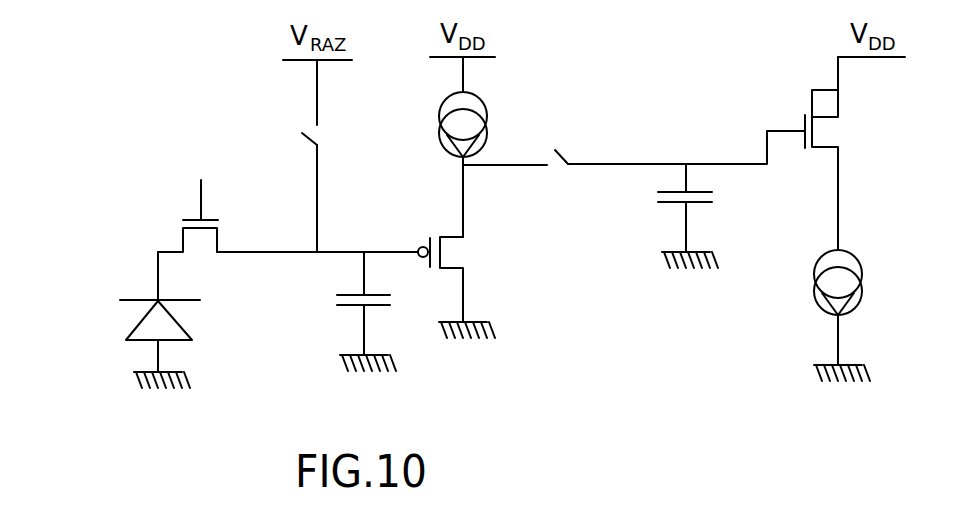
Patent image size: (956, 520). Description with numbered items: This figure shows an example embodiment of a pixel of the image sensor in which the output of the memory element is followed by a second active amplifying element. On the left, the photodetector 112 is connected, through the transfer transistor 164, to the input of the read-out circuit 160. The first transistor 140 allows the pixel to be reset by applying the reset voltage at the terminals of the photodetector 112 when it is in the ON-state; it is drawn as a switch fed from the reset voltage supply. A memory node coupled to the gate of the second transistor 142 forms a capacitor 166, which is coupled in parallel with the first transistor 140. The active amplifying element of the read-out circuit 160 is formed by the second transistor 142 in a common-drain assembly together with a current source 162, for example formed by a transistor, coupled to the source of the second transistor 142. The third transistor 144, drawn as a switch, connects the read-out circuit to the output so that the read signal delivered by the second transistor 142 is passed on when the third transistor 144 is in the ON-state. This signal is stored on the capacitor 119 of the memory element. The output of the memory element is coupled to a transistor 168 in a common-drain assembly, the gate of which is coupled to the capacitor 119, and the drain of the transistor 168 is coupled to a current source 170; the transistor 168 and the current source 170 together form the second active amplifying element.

The read-out circuit 160 is at (222, 145).
The transfer transistor 164 is at (183, 240).
The photodetector 112 is at (159, 320).
The first transistor 140 is at (303, 134).
The capacitor 166 is at (350, 307).
The current source 162 is at (473, 91).
The second transistor 142 is at (450, 256).
The third transistor 144 is at (557, 152).
The capacitor 119 is at (703, 203).
The transistor 168 is at (823, 133).
The current source 170 is at (843, 260).